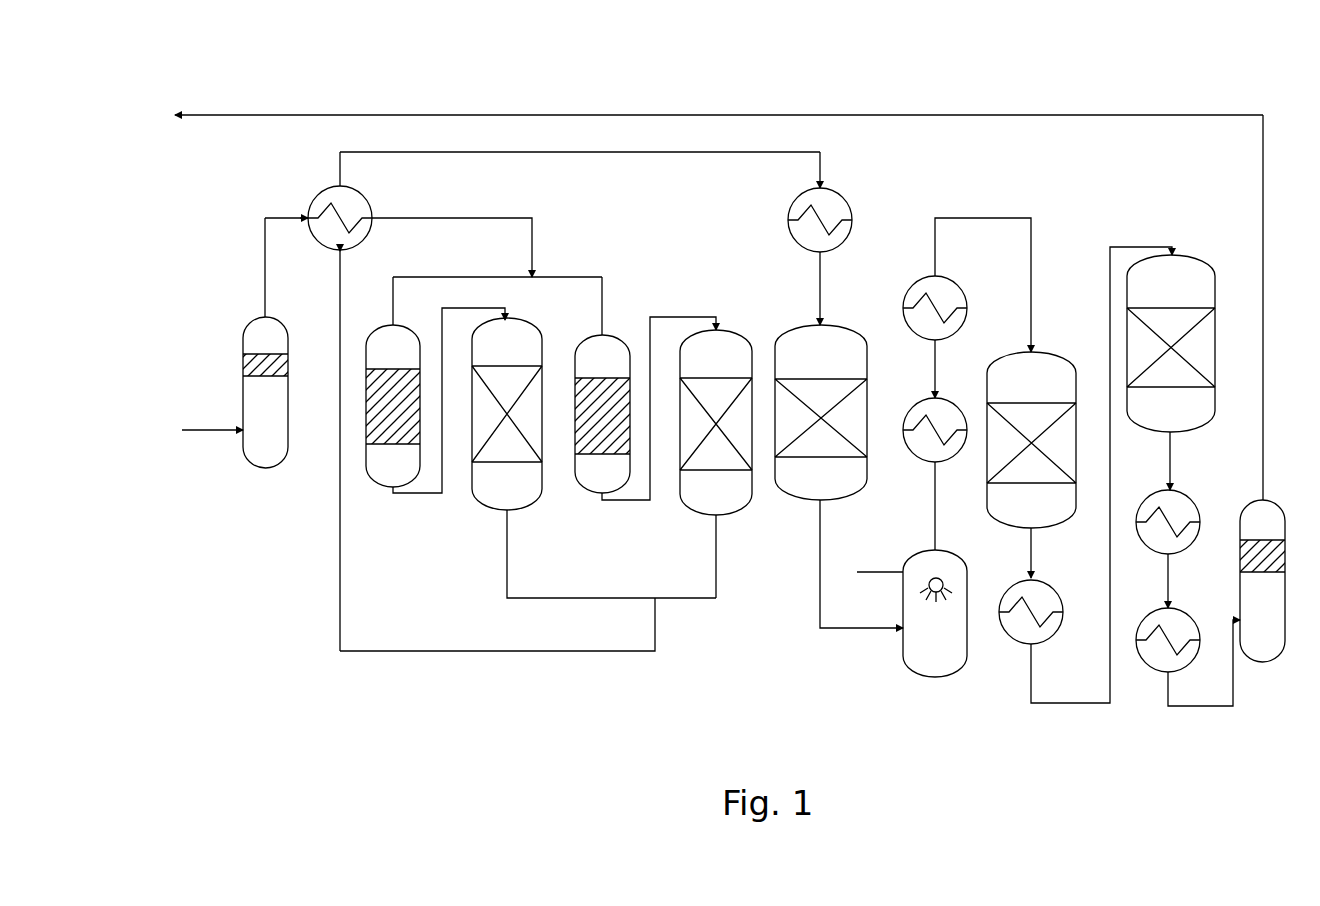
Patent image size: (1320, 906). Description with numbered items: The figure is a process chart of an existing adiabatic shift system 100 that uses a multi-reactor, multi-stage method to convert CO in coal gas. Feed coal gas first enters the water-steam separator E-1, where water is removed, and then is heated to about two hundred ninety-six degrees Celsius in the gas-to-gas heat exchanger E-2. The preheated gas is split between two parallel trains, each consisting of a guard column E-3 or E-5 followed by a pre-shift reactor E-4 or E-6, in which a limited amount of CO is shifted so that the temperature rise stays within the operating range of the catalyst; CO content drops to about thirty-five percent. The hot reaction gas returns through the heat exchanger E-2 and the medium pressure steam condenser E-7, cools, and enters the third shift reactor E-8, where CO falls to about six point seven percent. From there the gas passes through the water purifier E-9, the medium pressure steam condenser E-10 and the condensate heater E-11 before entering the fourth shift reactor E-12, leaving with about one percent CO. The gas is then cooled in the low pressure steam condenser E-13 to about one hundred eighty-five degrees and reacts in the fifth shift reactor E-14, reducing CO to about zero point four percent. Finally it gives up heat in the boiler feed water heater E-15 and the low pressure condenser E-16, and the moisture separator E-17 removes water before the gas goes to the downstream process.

The dry gas desulfurization system for coal gas 100 is at (457, 88).
The water-steam separator E-1 is at (235, 356).
The gas-to-gas heat exchanger E-2 is at (542, 401).
The guard column E-3 is at (484, 395).
The pre-shift reactor E-4 is at (528, 484).
The guard column E-5 is at (645, 399).
The pre-shift reactor E-6 is at (716, 464).
The medium pressure steam condenser E-7 is at (820, 238).
The packed reactor E-8 is at (839, 476).
The water purifier E-9 is at (912, 625).
The medium pressure steam condenser for cooling E-10 is at (935, 474).
The condensate heater E-11 is at (967, 308).
The packed reactor E-12 is at (1031, 465).
The low pressure steam condenser E-13 is at (1085, 475).
The 5th shift reactor E-14 is at (1171, 372).
The boiler feed water heater E-15 is at (1168, 549).
The low pressure condenser E-16 is at (1188, 657).
The moisture separator E-17 is at (1262, 594).